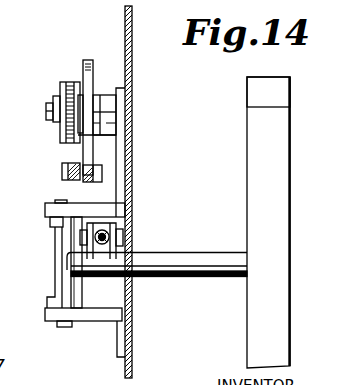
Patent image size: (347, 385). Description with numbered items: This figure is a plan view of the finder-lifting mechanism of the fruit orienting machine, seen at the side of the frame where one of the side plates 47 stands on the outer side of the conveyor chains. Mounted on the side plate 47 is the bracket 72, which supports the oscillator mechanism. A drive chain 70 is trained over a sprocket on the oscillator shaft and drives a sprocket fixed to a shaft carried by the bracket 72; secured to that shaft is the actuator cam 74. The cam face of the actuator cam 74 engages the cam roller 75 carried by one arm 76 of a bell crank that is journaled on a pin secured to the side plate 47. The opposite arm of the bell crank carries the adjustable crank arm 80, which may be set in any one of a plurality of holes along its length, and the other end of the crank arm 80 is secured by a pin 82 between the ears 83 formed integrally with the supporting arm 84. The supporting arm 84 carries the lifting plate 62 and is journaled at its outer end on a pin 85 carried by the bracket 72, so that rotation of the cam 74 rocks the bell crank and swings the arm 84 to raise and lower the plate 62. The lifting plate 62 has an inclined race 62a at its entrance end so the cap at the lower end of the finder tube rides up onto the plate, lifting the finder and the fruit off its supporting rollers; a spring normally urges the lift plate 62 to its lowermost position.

The side plate 47 is at (134, 120).
The lifting plate 62 is at (247, 116).
The inclined race 62a is at (299, 66).
The drive chain 70 is at (70, 142).
The bracket 72 is at (118, 344).
The actuator cam 74 is at (89, 61).
The cam roller 75 is at (80, 182).
The arm 76 is at (78, 181).
The adjustable crank arm 80 is at (103, 230).
The pin 82 is at (132, 231).
The ears 83 is at (135, 223).
The supporting arm 84 is at (214, 258).
The pin 85 is at (53, 268).